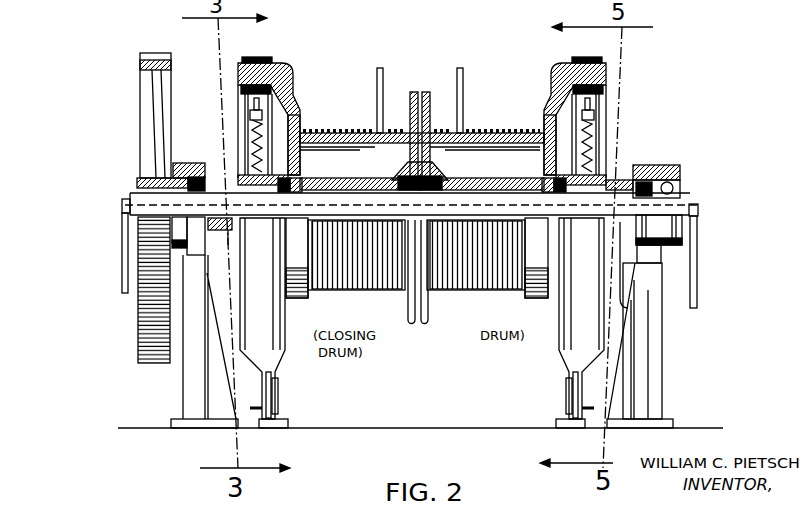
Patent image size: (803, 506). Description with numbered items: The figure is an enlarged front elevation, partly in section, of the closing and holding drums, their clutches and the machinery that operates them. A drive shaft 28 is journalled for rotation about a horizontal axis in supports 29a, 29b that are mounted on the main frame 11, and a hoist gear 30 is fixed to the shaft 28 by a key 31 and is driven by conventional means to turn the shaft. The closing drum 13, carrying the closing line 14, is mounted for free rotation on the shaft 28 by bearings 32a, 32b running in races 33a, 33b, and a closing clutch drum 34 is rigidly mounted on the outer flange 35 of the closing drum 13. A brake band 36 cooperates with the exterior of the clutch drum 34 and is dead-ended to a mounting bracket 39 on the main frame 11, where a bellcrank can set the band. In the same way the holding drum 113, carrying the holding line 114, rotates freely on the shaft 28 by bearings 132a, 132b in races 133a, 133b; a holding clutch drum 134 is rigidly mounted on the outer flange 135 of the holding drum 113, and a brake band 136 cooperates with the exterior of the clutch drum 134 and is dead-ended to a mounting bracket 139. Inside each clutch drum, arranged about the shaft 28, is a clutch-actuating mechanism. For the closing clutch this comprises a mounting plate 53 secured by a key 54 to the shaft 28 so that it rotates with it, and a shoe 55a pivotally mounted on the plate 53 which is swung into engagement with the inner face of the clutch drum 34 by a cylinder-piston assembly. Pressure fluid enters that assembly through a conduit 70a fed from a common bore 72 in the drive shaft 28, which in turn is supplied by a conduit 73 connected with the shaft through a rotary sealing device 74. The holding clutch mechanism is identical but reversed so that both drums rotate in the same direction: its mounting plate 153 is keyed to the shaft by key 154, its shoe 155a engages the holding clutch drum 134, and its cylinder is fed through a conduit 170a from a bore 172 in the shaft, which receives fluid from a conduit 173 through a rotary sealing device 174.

The main frame 11 is at (160, 438).
The closing drum 13 is at (400, 277).
The closing line 14 is at (378, 98).
The drive shaft 28 is at (137, 198).
The support 29a is at (193, 393).
The support 29b is at (648, 393).
The hoist gear 30 is at (146, 83).
The key 31 is at (140, 185).
The bearing 32a is at (280, 190).
The bearing 32b is at (405, 190).
The race 33a is at (296, 190).
The race 33b is at (420, 190).
The closing clutch drum 34 is at (280, 62).
The outer flange 35 is at (296, 100).
The brake band 36 is at (248, 60).
The mounting bracket 39 is at (278, 388).
The mounting plate 53 is at (240, 165).
The key 54 is at (244, 172).
The shoe 55a is at (241, 90).
The conduit 70a is at (230, 245).
The bore 72 is at (228, 170).
The conduit 73 is at (125, 258).
The rotary sealing device 74 is at (120, 205).
The holding drum 113 is at (443, 277).
The holding line 114 is at (461, 98).
The bearing 132a is at (432, 190).
The bearing 132b is at (560, 190).
The race 133a is at (442, 190).
The race 133b is at (548, 190).
The holding clutch drum 134 is at (562, 68).
The outer flange 135 is at (548, 98).
The brake band 136 is at (584, 60).
The mounting bracket 139 is at (566, 393).
The mounting plate 153 is at (605, 165).
The key 154 is at (606, 180).
The shoe 155a is at (603, 90).
The conduit 170a is at (608, 248).
The bore 172 is at (684, 196).
The conduit 173 is at (697, 258).
The rotary sealing device 174 is at (698, 210).